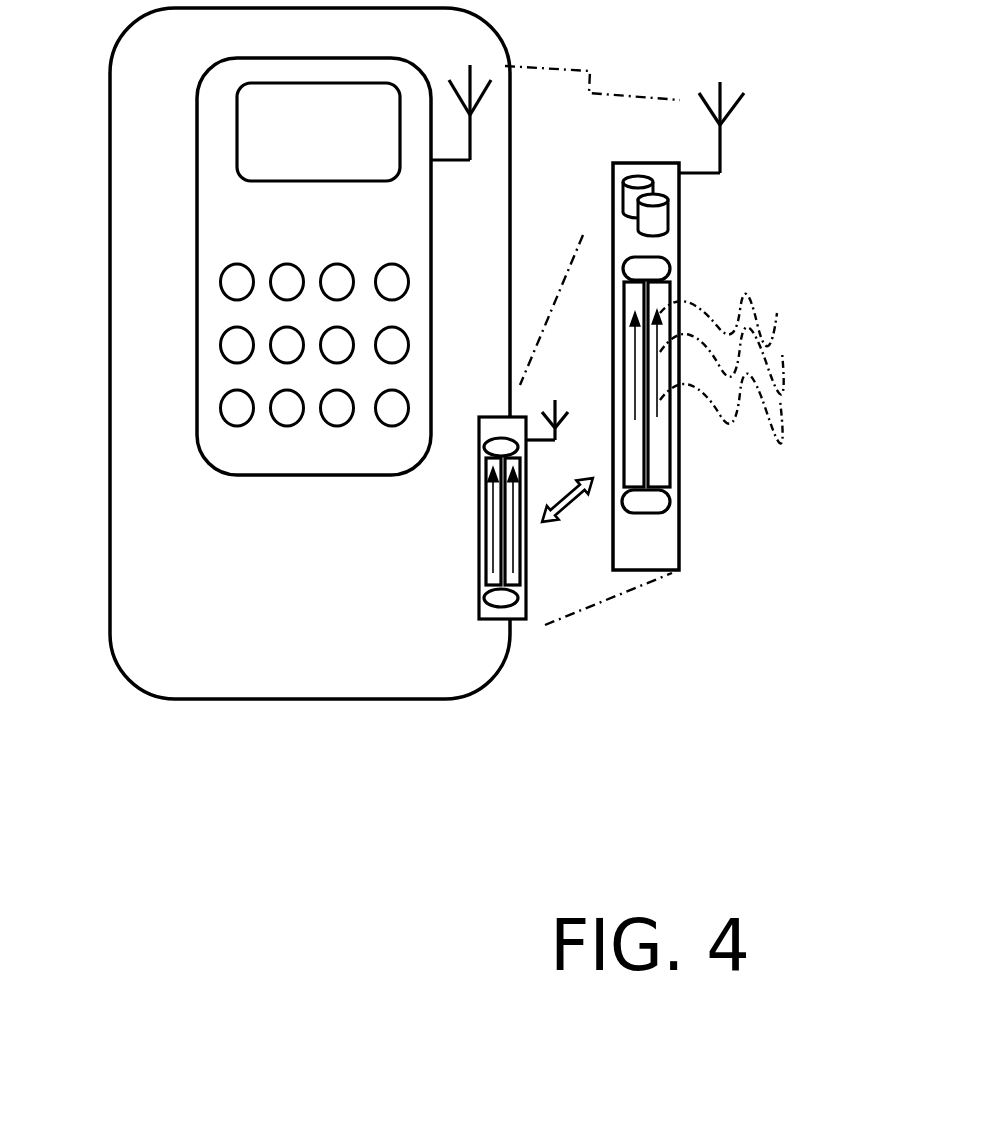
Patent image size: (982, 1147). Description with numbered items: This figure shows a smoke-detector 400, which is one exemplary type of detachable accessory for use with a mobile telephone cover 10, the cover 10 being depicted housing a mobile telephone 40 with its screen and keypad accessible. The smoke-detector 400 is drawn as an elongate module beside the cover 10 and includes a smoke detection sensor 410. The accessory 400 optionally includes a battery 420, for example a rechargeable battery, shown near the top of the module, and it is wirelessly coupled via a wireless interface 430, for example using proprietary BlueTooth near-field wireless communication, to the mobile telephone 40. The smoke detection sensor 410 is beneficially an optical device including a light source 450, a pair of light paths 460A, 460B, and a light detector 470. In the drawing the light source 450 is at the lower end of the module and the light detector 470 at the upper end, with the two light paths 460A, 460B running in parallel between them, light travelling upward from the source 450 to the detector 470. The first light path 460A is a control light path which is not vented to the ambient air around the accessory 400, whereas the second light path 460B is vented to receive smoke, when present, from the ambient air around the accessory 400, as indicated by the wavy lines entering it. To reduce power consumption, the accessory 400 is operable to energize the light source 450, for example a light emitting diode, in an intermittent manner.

The mobile telephone cover 10 is at (218, 625).
The mobile telephone 40 is at (328, 233).
The smoke-detector 400 is at (651, 552).
The smoke detection sensor 410 is at (696, 470).
The battery 420 is at (660, 212).
The wireless interface 430 is at (720, 140).
The light source 450 is at (645, 500).
The first light path 460A is at (632, 300).
The second light path 460B is at (655, 290).
The light detector 470 is at (648, 268).